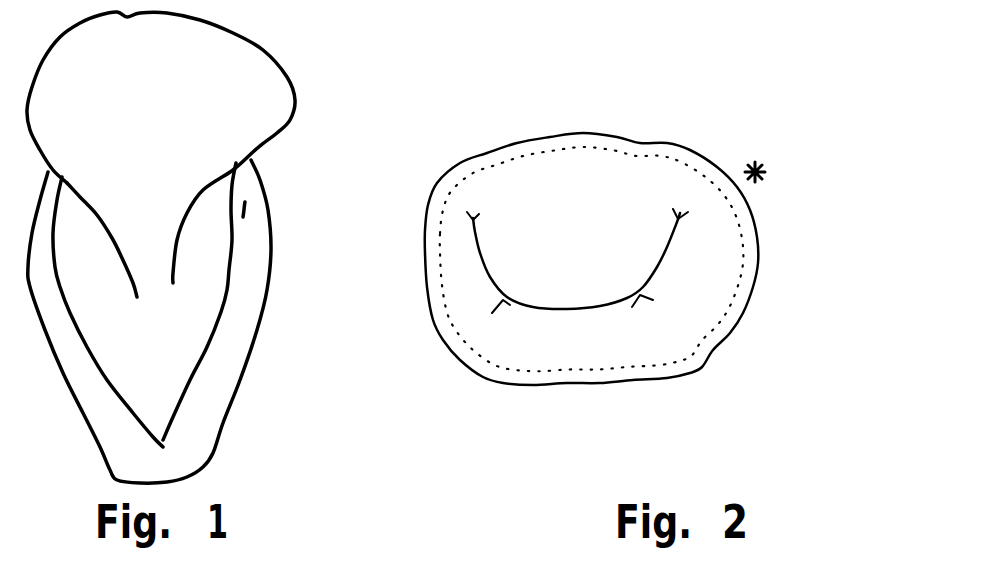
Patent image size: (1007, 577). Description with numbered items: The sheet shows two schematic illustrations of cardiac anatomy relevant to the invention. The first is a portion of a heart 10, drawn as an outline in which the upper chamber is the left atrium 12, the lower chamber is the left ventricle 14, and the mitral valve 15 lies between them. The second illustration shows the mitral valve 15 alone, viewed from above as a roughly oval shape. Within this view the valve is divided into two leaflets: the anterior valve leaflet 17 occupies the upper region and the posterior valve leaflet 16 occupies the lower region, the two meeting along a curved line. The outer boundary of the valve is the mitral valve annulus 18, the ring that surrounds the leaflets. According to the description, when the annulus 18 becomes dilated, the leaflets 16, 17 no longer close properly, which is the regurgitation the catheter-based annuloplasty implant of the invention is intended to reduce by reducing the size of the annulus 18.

In FIG. 1, the heart 10 is at (194, 242).
In FIG. 1, the left atrium 12 is at (212, 67).
In FIG. 1, the left ventricle 14 is at (193, 367).
In FIG. 1, the mitral valve 15 is at (187, 216).
In FIG. 2, the mitral valve 15 is at (651, 233).
In FIG. 2, the posterior valve leaflet 16 is at (480, 292).
In FIG. 2, the anterior valve leaflet 17 is at (497, 230).
In FIG. 2, the mitral valve annulus 18 is at (741, 267).